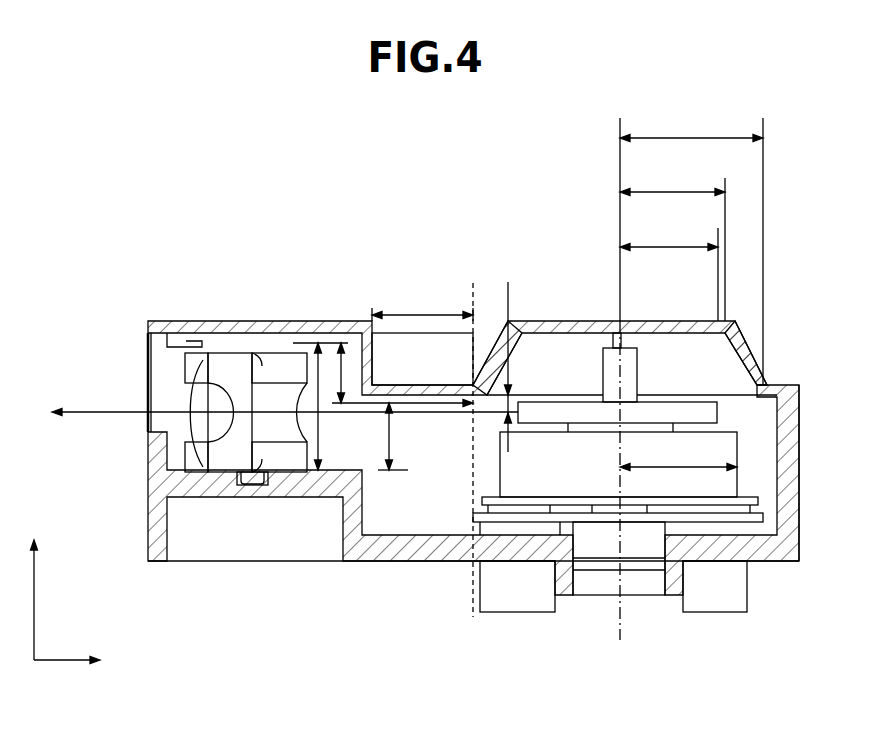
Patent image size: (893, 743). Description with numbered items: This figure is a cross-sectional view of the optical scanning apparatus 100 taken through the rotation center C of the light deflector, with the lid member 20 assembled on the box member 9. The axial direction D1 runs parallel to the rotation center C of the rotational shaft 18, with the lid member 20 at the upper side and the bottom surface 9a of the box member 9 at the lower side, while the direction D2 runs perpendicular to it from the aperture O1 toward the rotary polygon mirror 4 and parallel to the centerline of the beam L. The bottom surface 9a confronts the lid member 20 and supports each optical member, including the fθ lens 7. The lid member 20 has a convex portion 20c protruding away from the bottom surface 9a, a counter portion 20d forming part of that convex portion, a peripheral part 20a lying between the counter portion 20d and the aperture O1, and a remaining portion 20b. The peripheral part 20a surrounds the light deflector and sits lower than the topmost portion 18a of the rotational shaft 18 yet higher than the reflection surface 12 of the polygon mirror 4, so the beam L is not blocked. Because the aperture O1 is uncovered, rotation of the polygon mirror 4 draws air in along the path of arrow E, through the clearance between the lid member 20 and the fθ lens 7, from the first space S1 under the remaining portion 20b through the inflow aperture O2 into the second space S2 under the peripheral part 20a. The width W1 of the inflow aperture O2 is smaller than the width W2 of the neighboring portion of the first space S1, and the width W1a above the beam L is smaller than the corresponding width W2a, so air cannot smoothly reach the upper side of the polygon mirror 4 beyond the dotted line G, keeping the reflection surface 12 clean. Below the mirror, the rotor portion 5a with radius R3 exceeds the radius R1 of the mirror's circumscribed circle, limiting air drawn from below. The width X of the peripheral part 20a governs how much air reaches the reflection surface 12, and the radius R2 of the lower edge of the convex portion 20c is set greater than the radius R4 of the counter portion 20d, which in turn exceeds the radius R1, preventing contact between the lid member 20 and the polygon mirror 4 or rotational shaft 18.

The optical scanning apparatus 100 is at (203, 632).
The lid member 20 is at (188, 321).
The peripheral part 20a is at (420, 385).
The remaining portion 20b is at (252, 321).
The convex portion 20c is at (745, 342).
The counter portion 20d is at (542, 321).
The fθ lens 7 is at (185, 373).
The box member 9 is at (766, 547).
The bottom surface 9a is at (278, 483).
The rotary polygon mirror 4 is at (722, 392).
The rotor portion 5a is at (727, 483).
The reflection surface 12 is at (597, 415).
The rotational shaft 18 is at (637, 368).
The topmost portion of the rotational shaft 18a is at (617, 333).
The rotation center C is at (628, 626).
The beam L is at (273, 413).
The dotted line G is at (474, 464).
The width of the inflow aperture portion above the beam W1a is at (482, 354).
The width of the inflow aperture W1 is at (405, 436).
The width of the neighboring portion W2 is at (320, 345).
The width of the first-space portion above the beam W2a is at (342, 343).
The width of the peripheral part X is at (422, 305).
The arrow indicating air flow path E is at (443, 404).
The radius of the circumscribed circle of the polygon mirror R1 is at (669, 272).
The radius of the lower edge portion of the convex portion R2 is at (691, 250).
The radius of the rotor portion R3 is at (678, 457).
The radius of the third surface R4 is at (672, 245).
The axial direction D1 is at (34, 588).
The direction from the aperture to the polygon mirror D2 is at (69, 676).
The aperture O1 is at (150, 420).
The inflow aperture O2 is at (373, 435).
The first space S1 is at (337, 455).
The second space S2 is at (428, 510).